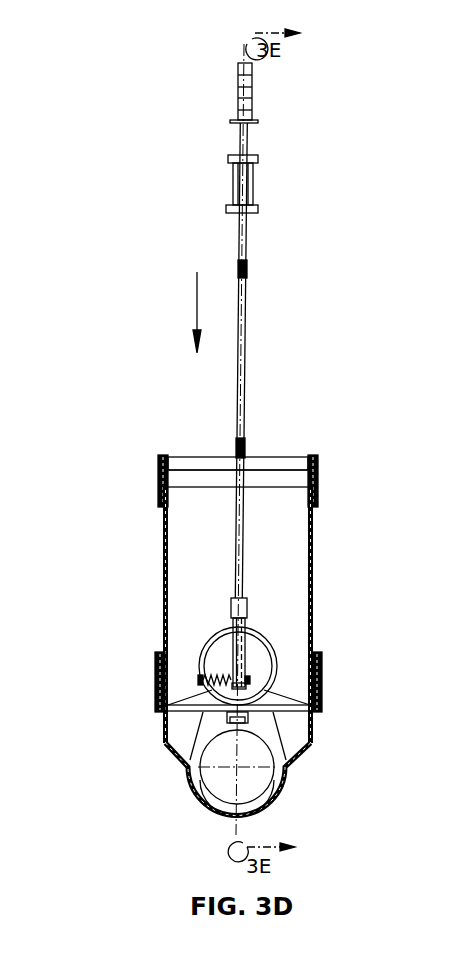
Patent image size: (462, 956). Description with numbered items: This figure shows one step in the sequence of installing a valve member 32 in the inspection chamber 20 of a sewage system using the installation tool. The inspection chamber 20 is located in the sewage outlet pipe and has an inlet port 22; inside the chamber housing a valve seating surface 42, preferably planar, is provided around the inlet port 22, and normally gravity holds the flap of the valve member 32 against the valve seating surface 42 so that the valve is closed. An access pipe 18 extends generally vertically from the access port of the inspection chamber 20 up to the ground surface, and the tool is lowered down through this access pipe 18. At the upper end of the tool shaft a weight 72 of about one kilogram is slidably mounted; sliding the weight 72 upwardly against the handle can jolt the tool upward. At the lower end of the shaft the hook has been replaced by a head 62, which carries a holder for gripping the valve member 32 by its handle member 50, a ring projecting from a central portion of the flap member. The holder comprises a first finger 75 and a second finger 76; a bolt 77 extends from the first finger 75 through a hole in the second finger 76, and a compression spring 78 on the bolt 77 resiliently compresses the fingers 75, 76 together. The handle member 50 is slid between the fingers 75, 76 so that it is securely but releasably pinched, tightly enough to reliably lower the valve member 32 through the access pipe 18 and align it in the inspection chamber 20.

The access pipe 18 is at (313, 560).
The inspection chamber 20 is at (323, 742).
The inlet port 22 is at (253, 787).
The valve member 32 is at (284, 650).
The valve seating surface 42 is at (277, 755).
The handle member 50 is at (237, 652).
The head 62 is at (247, 602).
The weight 72 is at (252, 185).
The first finger 75 is at (316, 712).
The second finger 76 is at (165, 709).
The bolt 77 is at (200, 679).
The compression spring 78 is at (207, 668).